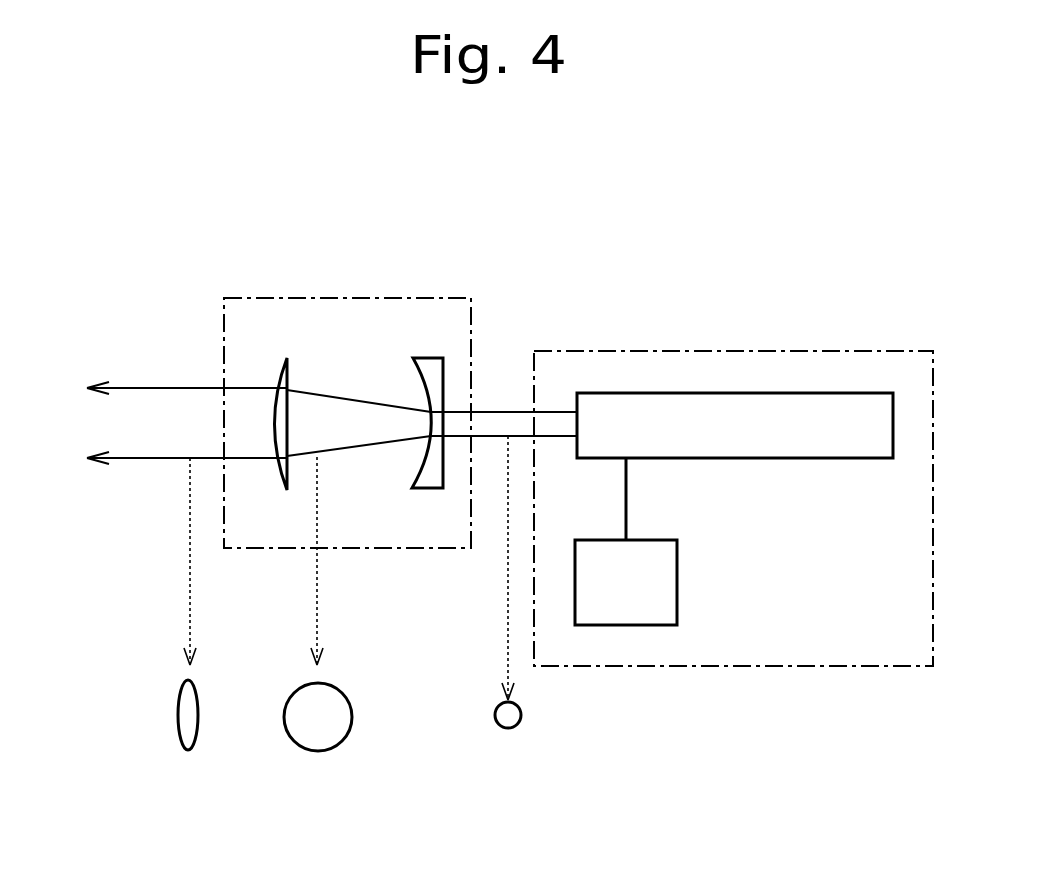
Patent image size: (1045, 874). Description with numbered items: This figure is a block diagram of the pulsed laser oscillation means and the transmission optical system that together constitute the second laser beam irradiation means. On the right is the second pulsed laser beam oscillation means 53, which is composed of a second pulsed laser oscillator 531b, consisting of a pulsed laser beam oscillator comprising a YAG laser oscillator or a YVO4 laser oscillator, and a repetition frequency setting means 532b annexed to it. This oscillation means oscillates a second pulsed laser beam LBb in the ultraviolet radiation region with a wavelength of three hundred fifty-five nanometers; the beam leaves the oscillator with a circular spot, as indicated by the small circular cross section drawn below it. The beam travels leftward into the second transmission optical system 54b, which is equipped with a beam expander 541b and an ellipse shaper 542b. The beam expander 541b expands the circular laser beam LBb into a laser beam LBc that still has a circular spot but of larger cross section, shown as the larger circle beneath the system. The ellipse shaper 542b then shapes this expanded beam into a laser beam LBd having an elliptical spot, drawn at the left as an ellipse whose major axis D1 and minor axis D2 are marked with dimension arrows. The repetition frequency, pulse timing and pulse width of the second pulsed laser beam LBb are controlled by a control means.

The second transmission optical system 54b is at (372, 302).
The ellipse shaper 542b is at (280, 377).
The beam expander 541b is at (430, 363).
The second pulsed laser beam oscillation means 53 is at (810, 352).
The second pulsed laser oscillator 531b is at (843, 460).
The repetition frequency setting means 532b is at (677, 588).
The laser beam having an elliptical spot LBd is at (198, 728).
The laser beam having a circular spot LBc is at (347, 738).
The second pulsed laser beam LBb is at (517, 723).
The major axis D1 is at (186, 680).
The minor axis D2 is at (198, 755).